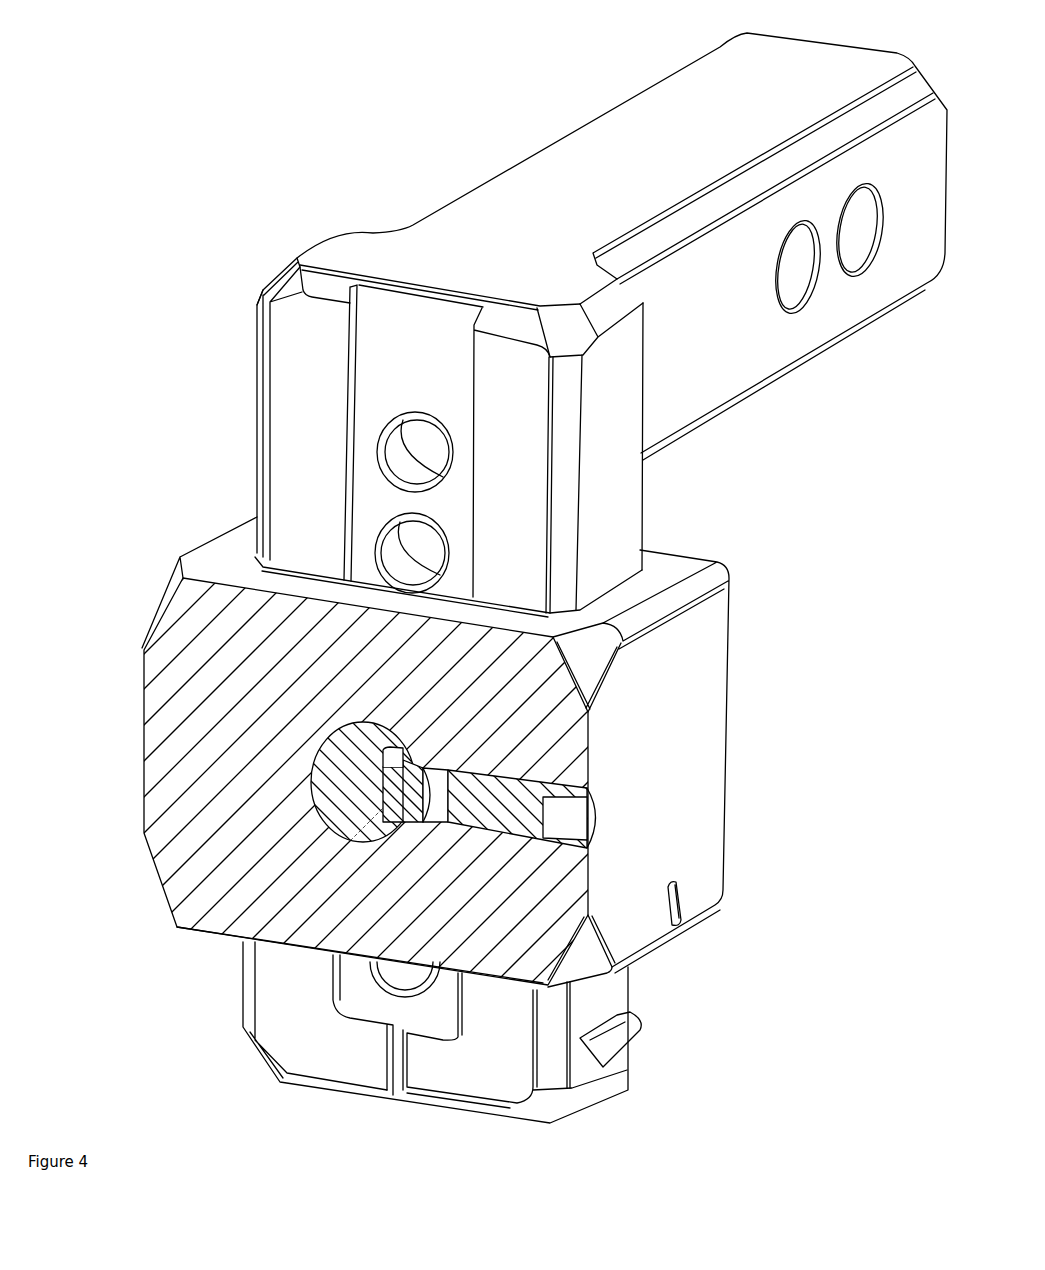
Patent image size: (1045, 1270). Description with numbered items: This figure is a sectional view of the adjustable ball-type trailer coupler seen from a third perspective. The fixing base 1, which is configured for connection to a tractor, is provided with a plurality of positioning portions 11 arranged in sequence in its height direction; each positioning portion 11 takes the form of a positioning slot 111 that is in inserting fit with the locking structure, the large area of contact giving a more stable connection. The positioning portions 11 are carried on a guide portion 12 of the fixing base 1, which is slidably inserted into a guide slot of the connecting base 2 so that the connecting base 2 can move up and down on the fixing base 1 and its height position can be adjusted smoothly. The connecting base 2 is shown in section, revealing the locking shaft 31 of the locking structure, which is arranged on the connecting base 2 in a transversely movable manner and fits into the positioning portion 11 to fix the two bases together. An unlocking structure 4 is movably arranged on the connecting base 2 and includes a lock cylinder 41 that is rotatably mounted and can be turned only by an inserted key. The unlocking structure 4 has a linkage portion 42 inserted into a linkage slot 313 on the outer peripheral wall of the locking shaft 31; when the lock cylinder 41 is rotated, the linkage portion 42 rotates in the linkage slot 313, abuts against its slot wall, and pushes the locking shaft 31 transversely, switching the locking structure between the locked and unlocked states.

The fixing base 1 is at (573, 170).
The positioning portion 11 is at (382, 468).
The positioning slot 111 is at (422, 450).
The guide portion 12 is at (610, 527).
The connecting base 2 is at (693, 723).
The locking shaft 31 is at (330, 793).
The linkage slot 313 is at (383, 758).
The unlocking structure 4 is at (604, 818).
The lock cylinder 41 is at (565, 841).
The linkage portion 42 is at (253, 937).